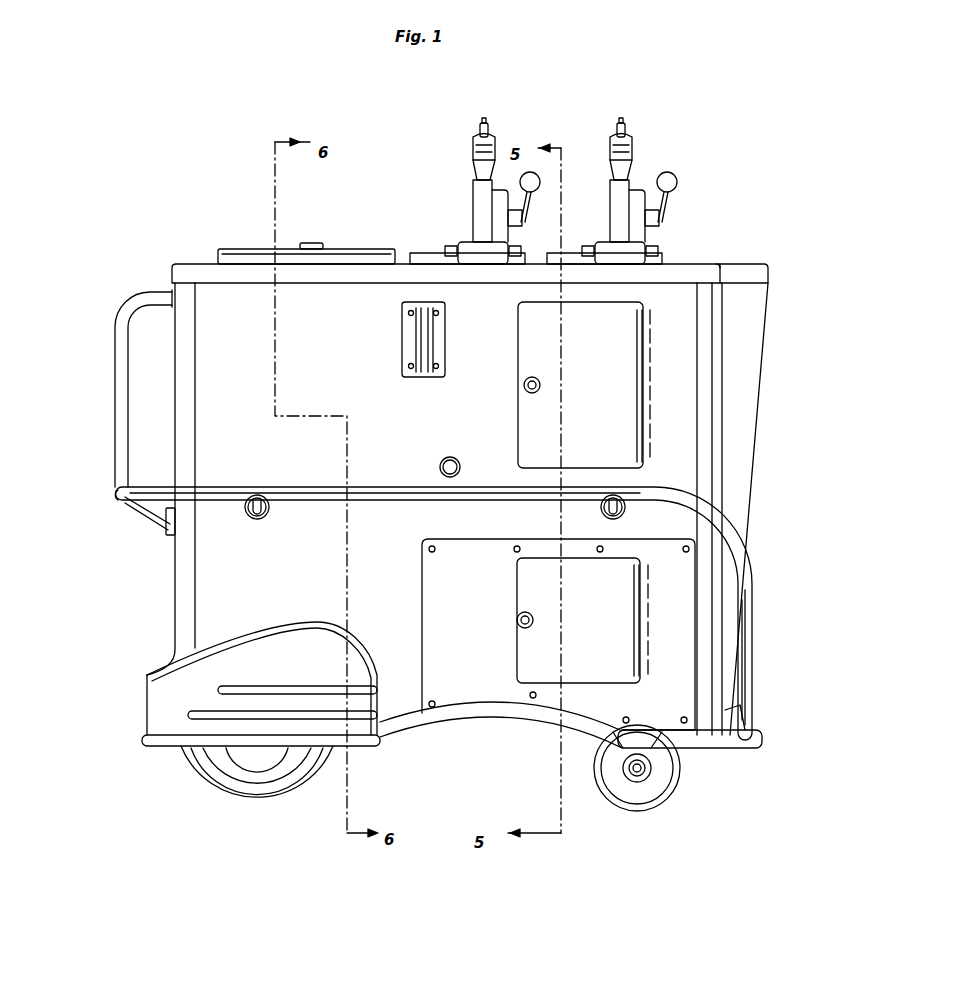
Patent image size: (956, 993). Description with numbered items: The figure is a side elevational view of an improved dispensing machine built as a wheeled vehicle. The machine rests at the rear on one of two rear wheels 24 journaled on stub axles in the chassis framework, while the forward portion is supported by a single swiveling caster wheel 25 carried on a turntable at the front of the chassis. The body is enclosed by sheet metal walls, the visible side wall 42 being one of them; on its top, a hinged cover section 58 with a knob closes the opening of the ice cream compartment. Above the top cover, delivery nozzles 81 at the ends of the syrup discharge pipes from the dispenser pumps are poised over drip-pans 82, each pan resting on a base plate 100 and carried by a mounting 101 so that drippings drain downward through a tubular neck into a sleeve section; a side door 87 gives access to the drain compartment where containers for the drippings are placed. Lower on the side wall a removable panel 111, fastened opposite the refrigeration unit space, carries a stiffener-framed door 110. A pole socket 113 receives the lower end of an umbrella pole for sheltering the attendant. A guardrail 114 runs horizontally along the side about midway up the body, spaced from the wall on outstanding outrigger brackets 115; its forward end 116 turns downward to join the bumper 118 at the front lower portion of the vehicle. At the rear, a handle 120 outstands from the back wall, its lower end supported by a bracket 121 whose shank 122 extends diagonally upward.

The rear wheel 24 is at (205, 767).
The caster wheel 25 is at (670, 773).
The side wall 42 is at (223, 582).
The cover section 58 is at (262, 253).
The delivery nozzle 81 is at (482, 193).
The drip-pan 82 is at (487, 248).
The side door 87 is at (610, 410).
The base plate 100 is at (417, 257).
The mounting block 101 is at (423, 257).
The door 110 is at (617, 572).
The removable panel 111 is at (678, 583).
The pole socket 113 is at (430, 312).
The guardrail 114 is at (125, 494).
The outrigger bracket 115 is at (250, 515).
The forward end of guardrail 116 is at (745, 668).
The bumper 118 is at (758, 727).
The handle 120 is at (152, 287).
The bracket 121 is at (167, 535).
The shank 122 is at (148, 512).